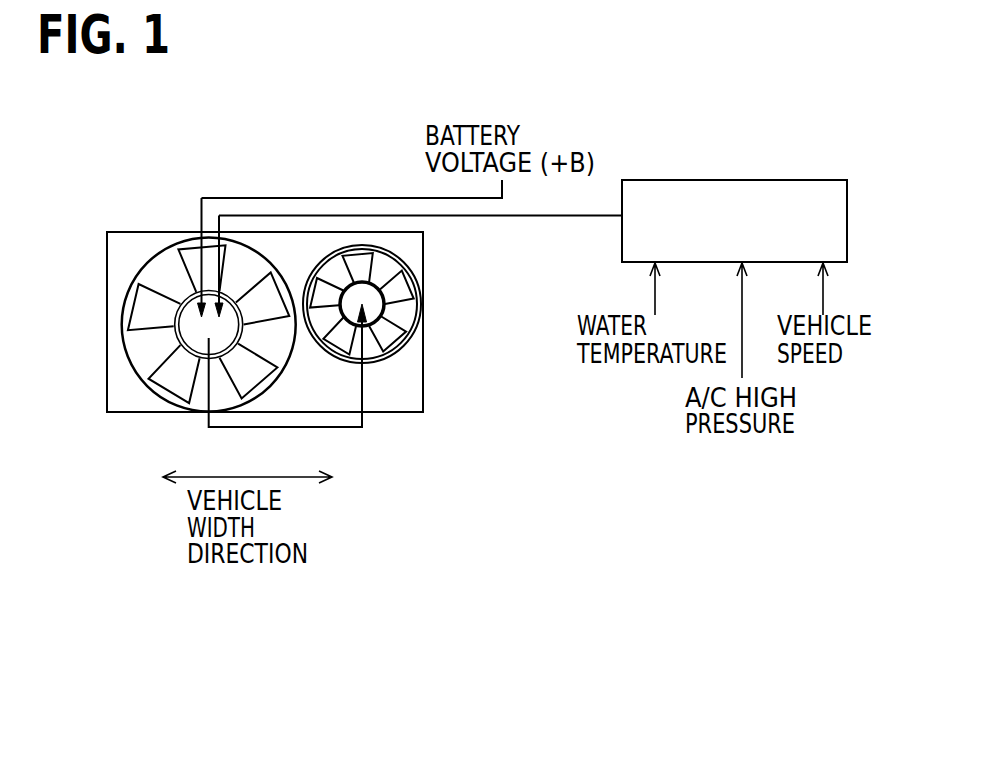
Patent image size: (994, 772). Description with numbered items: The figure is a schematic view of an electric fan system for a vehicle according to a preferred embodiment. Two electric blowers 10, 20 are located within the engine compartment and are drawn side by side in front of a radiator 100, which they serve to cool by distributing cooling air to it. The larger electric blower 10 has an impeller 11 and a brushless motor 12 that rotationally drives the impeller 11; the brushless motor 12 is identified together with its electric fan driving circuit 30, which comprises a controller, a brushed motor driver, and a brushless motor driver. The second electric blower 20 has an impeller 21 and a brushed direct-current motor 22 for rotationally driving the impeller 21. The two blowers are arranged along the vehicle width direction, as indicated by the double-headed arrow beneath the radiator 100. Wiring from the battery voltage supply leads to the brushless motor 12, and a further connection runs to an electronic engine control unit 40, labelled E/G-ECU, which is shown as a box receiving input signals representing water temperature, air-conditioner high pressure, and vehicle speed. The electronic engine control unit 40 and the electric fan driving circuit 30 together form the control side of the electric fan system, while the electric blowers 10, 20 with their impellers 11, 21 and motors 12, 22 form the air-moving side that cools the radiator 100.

The electric blower 10 is at (363, 382).
The impeller 11 is at (173, 380).
The brushless motor 12 is at (423, 431).
The electric fan driving circuit 30 is at (425, 433).
The radiator 100 is at (140, 415).
The electric blower 20 is at (410, 341).
The impeller 21 is at (387, 335).
The brushed motor 22 is at (367, 302).
The electronic engine control unit 40 is at (622, 262).